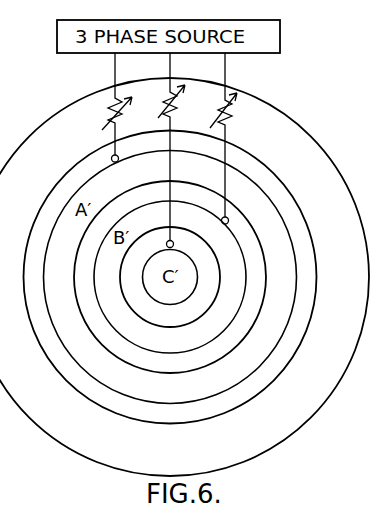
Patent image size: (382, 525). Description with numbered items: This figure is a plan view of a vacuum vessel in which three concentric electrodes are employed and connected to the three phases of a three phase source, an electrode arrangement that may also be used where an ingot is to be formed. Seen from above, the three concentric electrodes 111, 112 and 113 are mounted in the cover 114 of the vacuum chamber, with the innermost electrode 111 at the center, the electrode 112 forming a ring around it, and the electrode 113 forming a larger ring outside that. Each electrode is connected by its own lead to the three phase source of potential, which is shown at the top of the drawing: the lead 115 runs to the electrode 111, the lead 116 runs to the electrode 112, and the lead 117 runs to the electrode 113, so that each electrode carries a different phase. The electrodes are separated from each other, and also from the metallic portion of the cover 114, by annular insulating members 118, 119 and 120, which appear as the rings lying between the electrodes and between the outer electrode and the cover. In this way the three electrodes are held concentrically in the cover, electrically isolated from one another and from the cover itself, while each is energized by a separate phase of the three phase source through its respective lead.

The concentric electrode 111 is at (193, 277).
The concentric electrode 112 is at (100, 276).
The concentric electrode 113 is at (293, 276).
The cover 114 is at (263, 108).
The lead 115 is at (168, 65).
The lead 116 is at (222, 65).
The lead 117 is at (113, 65).
The annular insulating member 118 is at (188, 320).
The annular insulating member 119 is at (192, 366).
The annular insulating member 120 is at (193, 416).